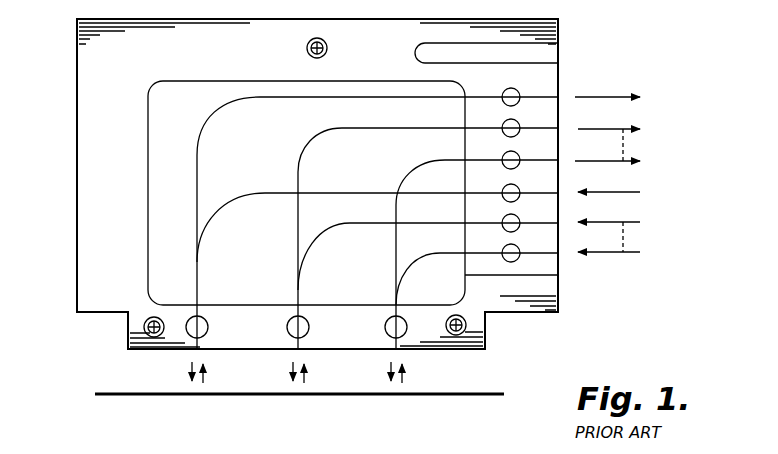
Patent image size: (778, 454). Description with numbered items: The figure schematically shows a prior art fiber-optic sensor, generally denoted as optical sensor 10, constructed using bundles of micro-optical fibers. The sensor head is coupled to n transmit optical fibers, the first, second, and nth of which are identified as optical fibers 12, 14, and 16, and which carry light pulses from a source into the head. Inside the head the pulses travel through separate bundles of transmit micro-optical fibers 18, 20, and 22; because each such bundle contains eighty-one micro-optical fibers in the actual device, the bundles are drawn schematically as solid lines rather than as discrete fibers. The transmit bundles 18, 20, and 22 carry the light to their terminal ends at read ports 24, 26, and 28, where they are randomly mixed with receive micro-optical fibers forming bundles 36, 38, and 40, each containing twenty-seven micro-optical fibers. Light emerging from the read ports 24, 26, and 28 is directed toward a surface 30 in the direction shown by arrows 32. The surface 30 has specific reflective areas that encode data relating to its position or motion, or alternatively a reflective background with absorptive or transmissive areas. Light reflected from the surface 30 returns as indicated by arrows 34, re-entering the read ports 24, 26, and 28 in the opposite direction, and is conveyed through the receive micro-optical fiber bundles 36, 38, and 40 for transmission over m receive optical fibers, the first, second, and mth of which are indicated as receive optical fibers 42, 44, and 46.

The optical sensor 10 is at (106, 320).
The optical fiber T1 12 is at (616, 193).
The optical fiber T2 14 is at (610, 223).
The optical fiber Tn 16 is at (606, 254).
The bundle of transmit micro-optical fibers 18 is at (369, 192).
The bundle of transmit micro-optical fibers 20 is at (370, 222).
The bundle of transmit micro-optical fibers 22 is at (440, 254).
The read port 24 is at (196, 350).
The read port 26 is at (297, 350).
The read port 28 is at (395, 350).
The surface 30 is at (470, 388).
The arrows 32 is at (189, 367).
The arrows 34 is at (206, 368).
The bundle of receive micro-optical fibers 36 is at (322, 98).
The bundle of receive micro-optical fibers 38 is at (297, 228).
The bundle of receive micro-optical fibers 40 is at (396, 262).
The receive optical fiber R1 42 is at (604, 96).
The receive optical fiber R2 44 is at (592, 128).
The receive optical fiber Rm 46 is at (588, 140).